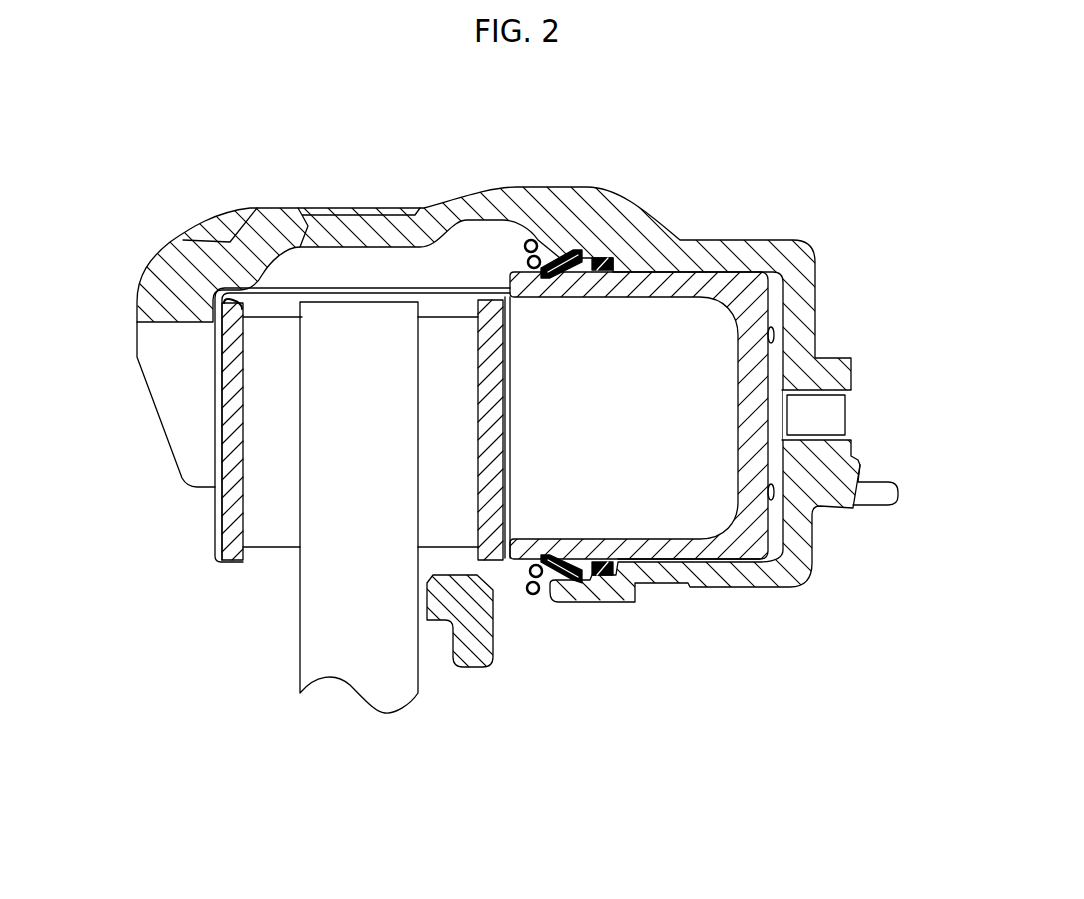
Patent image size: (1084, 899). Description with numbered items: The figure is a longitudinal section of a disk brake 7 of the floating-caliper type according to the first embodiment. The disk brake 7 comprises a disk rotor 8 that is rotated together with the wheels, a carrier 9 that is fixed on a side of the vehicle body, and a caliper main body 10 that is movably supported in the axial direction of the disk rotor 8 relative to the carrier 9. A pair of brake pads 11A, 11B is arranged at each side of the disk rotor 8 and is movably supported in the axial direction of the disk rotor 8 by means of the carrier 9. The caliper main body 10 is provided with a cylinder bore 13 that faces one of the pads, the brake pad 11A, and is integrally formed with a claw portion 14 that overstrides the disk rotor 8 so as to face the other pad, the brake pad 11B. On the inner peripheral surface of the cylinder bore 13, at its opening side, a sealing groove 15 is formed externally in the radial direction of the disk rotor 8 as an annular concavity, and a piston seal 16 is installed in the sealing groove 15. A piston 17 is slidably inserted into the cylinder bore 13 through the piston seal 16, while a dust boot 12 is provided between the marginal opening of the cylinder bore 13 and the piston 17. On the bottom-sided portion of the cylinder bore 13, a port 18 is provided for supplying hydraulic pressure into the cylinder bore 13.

The disk brake 7 is at (474, 188).
The disk rotor 8 is at (391, 692).
The carrier 9 is at (477, 653).
The caliper main body 10 is at (640, 220).
The brake pad 11A is at (493, 552).
The brake pad 11B is at (270, 535).
The dust boot 12 is at (537, 600).
The cylinder bore 13 is at (723, 558).
The claw portion 14 is at (171, 420).
The sealing groove 15 is at (600, 580).
The piston seal 16 is at (613, 570).
The piston 17 is at (693, 550).
The port 18 is at (827, 417).